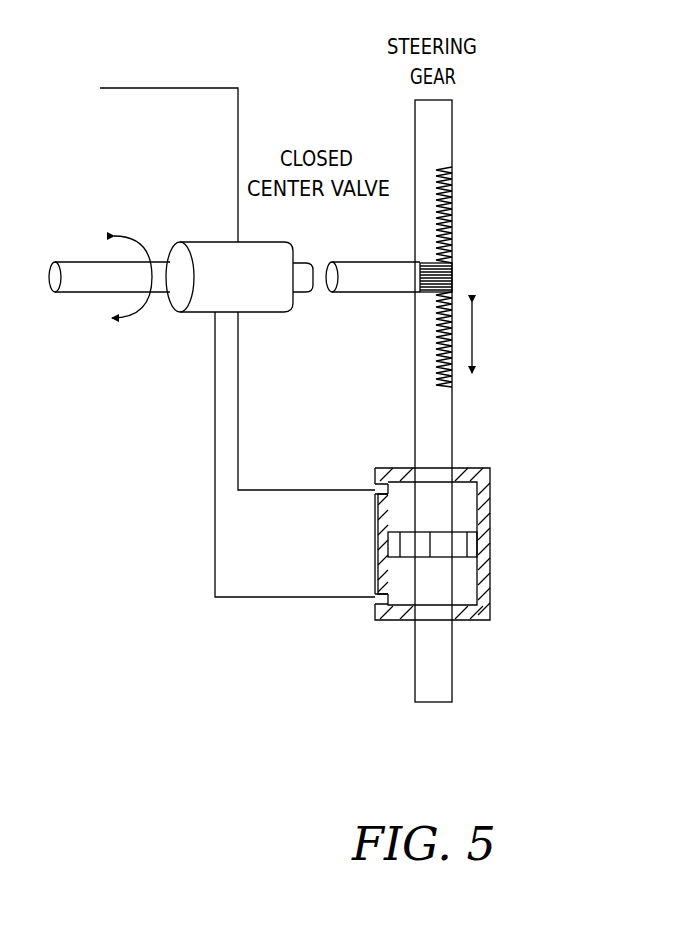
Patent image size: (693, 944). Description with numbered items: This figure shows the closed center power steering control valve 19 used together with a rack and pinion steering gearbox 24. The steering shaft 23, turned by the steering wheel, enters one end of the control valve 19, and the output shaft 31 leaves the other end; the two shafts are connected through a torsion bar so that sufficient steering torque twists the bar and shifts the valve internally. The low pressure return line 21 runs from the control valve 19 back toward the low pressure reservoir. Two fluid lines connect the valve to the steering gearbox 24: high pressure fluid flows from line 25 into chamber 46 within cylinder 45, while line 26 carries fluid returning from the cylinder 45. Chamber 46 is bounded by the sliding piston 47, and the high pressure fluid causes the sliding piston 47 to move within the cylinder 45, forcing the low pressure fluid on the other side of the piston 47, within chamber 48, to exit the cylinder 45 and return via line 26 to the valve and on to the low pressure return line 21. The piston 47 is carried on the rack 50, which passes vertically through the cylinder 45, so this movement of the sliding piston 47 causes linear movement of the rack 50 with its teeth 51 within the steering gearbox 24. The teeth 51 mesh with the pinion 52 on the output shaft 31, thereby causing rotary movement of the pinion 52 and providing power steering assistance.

The power steering control valve 19 is at (270, 253).
The low pressure return line 21 is at (171, 88).
The steering shaft 23 is at (76, 293).
The steering gearbox 24 is at (556, 137).
The line 25 is at (213, 528).
The line 26 is at (240, 461).
The output shaft 31 is at (370, 293).
The cylinder 45 is at (491, 503).
The chamber 46 is at (400, 608).
The sliding piston 47 is at (470, 545).
The chamber 48 is at (403, 515).
The rack 50 is at (453, 115).
The teeth 51 is at (453, 183).
The pinion 52 is at (453, 272).